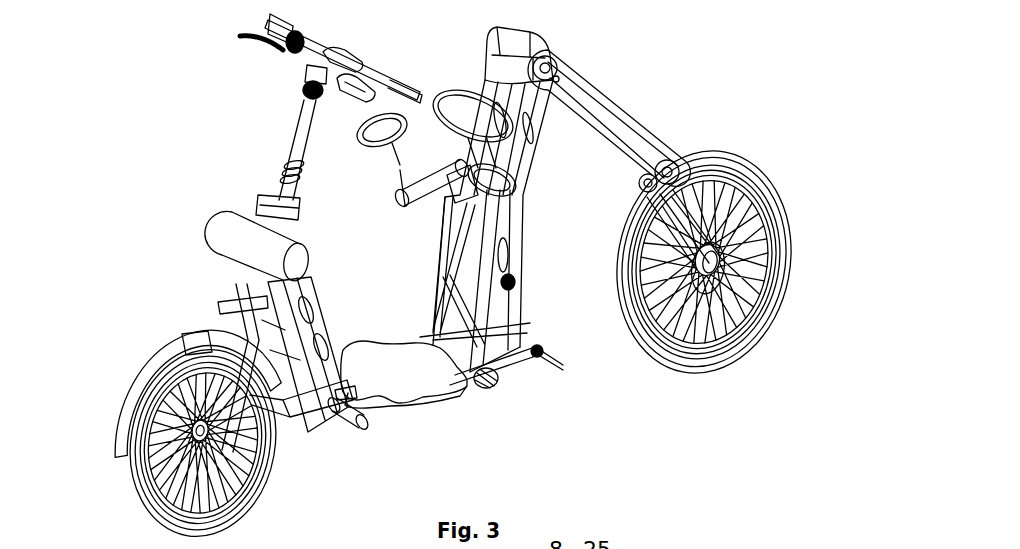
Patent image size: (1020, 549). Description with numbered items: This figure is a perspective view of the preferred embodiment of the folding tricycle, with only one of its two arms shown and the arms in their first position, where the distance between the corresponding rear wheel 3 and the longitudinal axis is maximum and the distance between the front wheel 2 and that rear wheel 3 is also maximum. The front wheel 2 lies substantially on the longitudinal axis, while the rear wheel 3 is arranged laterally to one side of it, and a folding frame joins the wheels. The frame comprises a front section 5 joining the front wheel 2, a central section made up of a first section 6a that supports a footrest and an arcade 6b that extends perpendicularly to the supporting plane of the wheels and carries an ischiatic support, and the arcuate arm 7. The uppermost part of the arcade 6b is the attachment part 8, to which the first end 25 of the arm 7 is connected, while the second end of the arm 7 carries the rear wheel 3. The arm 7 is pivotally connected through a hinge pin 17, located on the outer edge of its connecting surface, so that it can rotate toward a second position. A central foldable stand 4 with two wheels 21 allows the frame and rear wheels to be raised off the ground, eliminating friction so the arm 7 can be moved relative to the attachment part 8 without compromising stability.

The front wheel 2 is at (153, 388).
The rear wheel 3 is at (717, 153).
The stand 4 is at (510, 367).
The front section 5 is at (297, 335).
The first section 6a is at (381, 402).
The arcade 6b is at (502, 222).
The arm 7 is at (620, 103).
The attachment part 8 is at (515, 47).
The hinge pin 17 is at (558, 80).
The wheels 21 is at (481, 388).
The first end 25 is at (547, 66).